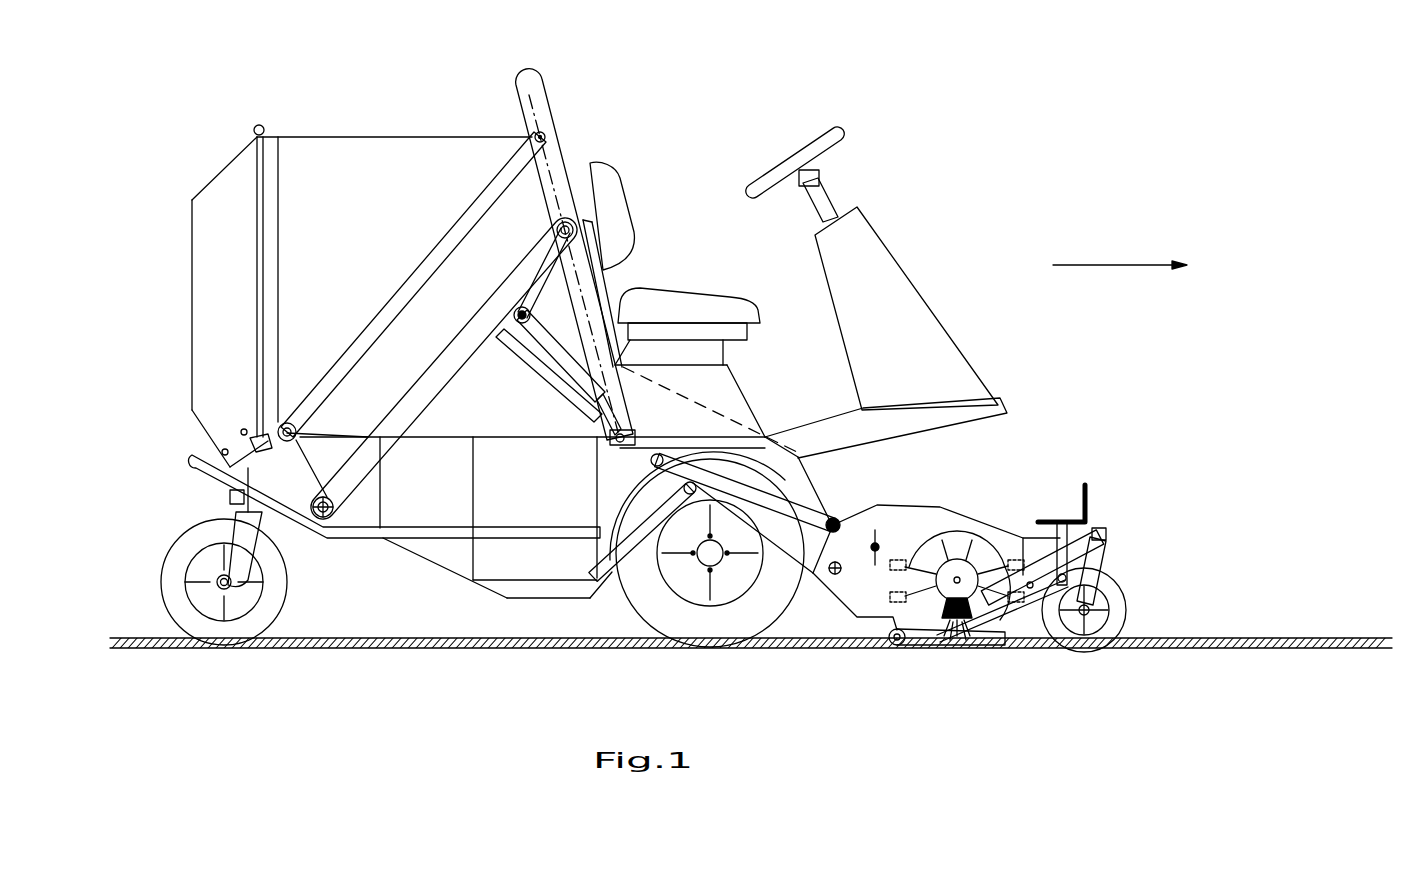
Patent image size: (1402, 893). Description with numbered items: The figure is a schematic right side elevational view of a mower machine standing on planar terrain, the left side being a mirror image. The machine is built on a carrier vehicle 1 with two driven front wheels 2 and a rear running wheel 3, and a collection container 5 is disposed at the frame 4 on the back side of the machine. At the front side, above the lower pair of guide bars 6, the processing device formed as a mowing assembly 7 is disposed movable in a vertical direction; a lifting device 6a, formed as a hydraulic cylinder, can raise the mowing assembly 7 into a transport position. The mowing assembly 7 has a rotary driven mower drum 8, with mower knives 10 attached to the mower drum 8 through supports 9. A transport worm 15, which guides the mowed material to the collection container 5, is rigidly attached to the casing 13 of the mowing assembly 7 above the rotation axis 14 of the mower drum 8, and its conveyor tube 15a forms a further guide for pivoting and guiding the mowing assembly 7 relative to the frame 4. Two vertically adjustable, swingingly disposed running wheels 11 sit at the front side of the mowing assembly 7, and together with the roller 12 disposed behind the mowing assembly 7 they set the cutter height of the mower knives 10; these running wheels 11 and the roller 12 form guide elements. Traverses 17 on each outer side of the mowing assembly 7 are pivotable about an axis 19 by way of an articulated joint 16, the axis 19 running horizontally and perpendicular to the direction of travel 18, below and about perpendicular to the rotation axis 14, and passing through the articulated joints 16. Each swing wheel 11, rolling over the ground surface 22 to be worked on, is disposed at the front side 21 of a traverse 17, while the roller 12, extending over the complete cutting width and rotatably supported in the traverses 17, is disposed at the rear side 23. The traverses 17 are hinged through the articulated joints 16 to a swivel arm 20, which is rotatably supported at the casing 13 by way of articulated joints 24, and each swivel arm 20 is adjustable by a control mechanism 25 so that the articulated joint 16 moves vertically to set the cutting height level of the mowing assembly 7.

The carrier vehicle 1 is at (417, 560).
The driven front wheels 2 is at (750, 612).
The rear running wheel 3 is at (258, 622).
The frame 4 is at (350, 540).
The collection container 5 is at (418, 167).
The lower pair of guide bars 6 is at (817, 512).
The lifting device 6a is at (640, 613).
The mowing assembly 7 is at (968, 492).
The mower drum 8 is at (945, 545).
The supports 9 is at (983, 530).
The mower knives 10 is at (957, 552).
The running wheels 11 is at (1107, 587).
The roller 12 is at (888, 636).
The casing 13 is at (877, 517).
The rotation axis 14 is at (1013, 540).
The transport worm 15 is at (650, 390).
The conveyor tube 15a is at (707, 430).
The articulated joint 16 is at (948, 655).
The traverses 17 is at (1010, 642).
The direction of travel 18 is at (1083, 265).
The axis 19 is at (954, 642).
The swivel arm 20 is at (980, 642).
The front side 21 is at (1083, 540).
The ground surface 22 is at (1085, 650).
The rear side 23 is at (876, 570).
The articulated joints 24 is at (1030, 547).
The control mechanism 25 is at (1083, 537).